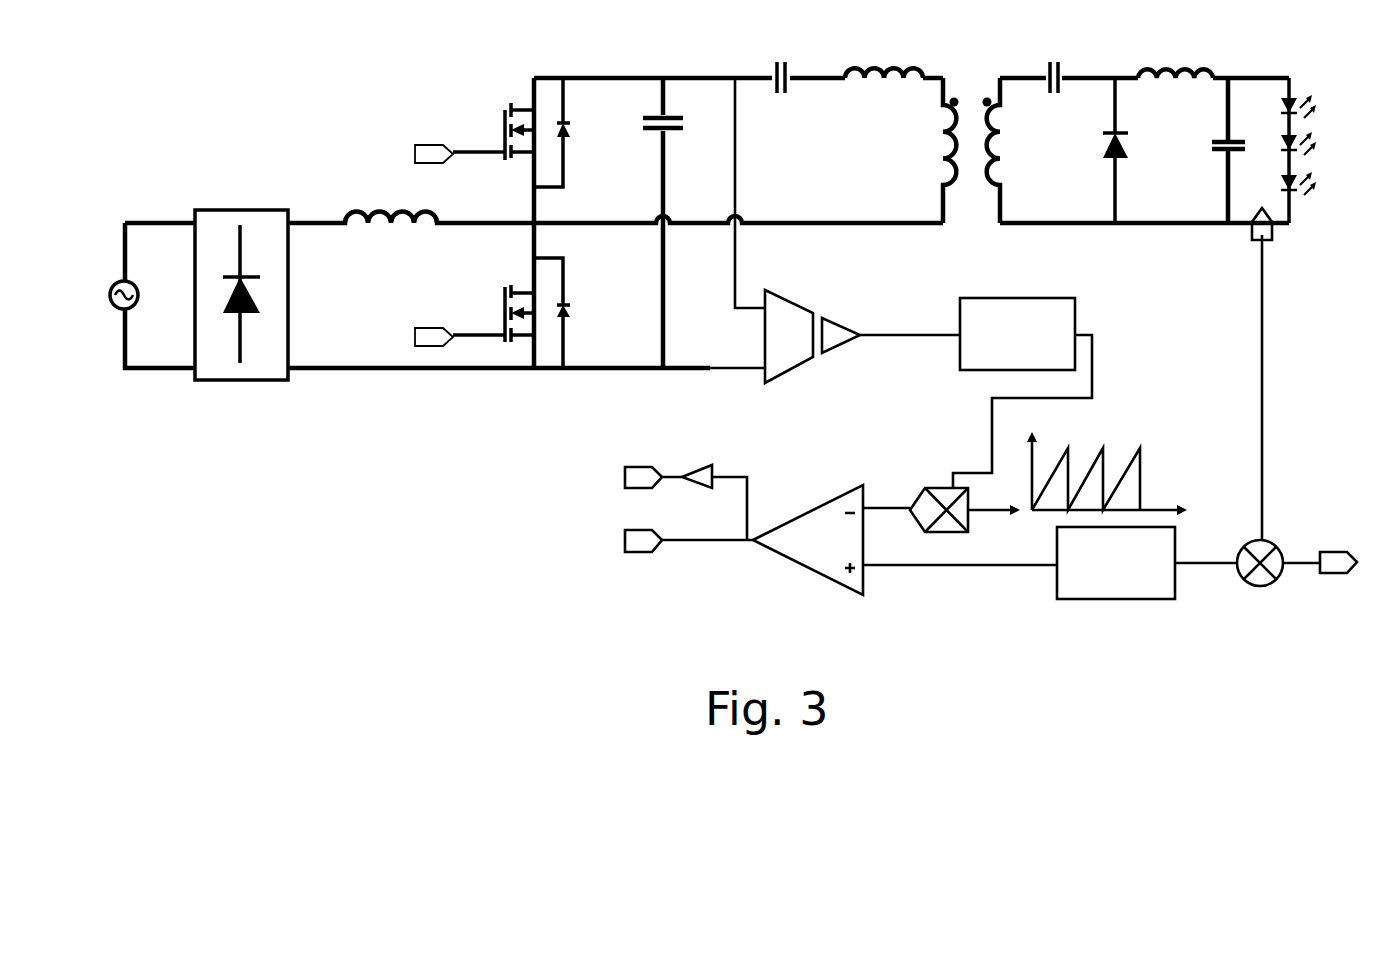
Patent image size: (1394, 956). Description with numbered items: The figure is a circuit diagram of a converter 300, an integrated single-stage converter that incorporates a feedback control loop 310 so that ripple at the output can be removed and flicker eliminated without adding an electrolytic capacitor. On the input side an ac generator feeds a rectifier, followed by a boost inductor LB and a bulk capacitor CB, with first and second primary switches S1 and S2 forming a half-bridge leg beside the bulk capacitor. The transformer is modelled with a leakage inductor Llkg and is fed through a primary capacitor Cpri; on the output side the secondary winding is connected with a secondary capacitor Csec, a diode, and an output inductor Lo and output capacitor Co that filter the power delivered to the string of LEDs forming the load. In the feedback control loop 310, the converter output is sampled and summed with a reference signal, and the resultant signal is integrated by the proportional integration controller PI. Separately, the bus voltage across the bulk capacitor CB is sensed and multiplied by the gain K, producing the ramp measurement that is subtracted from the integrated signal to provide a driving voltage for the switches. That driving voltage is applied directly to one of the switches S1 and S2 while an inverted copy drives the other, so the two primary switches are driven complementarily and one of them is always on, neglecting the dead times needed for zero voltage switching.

The converter 300 is at (272, 118).
The feedback control loop 310 is at (1185, 637).
The first primary switch S1 is at (511, 132).
The second primary switch S2 is at (511, 313).
The boost inductor LB is at (411, 190).
The bulk capacitor CB is at (679, 223).
The primary capacitor Cpri is at (805, 103).
The leakage inductor Llkg is at (884, 106).
The secondary capacitor Csec is at (1062, 103).
The output inductor Lo is at (1175, 45).
The output capacitor Co is at (1206, 150).
The gain K is at (1017, 334).
The proportional integration controller PI is at (1116, 563).